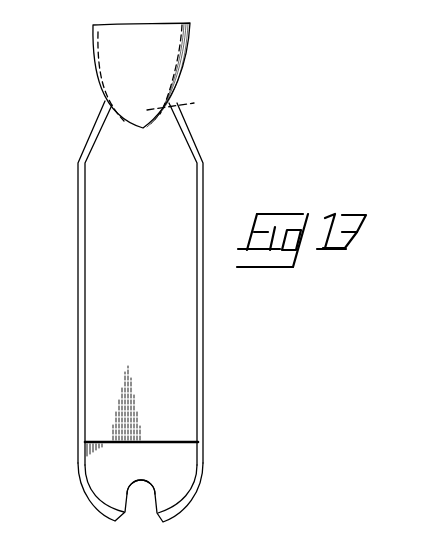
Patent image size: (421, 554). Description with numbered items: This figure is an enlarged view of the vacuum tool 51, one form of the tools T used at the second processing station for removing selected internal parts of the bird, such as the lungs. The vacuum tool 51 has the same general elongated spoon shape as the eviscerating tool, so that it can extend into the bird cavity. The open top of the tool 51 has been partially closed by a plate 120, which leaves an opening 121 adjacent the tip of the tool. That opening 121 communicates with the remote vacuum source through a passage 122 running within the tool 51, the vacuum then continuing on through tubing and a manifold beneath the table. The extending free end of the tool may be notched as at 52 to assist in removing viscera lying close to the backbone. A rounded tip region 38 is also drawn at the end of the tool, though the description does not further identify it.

The tool T is at (204, 194).
The rounded tip cap 38 is at (188, 52).
The passage 122 is at (190, 101).
The vacuum tool 51 is at (78, 236).
The plate 120 is at (162, 358).
The opening 121 is at (188, 478).
The notch 52 is at (132, 510).